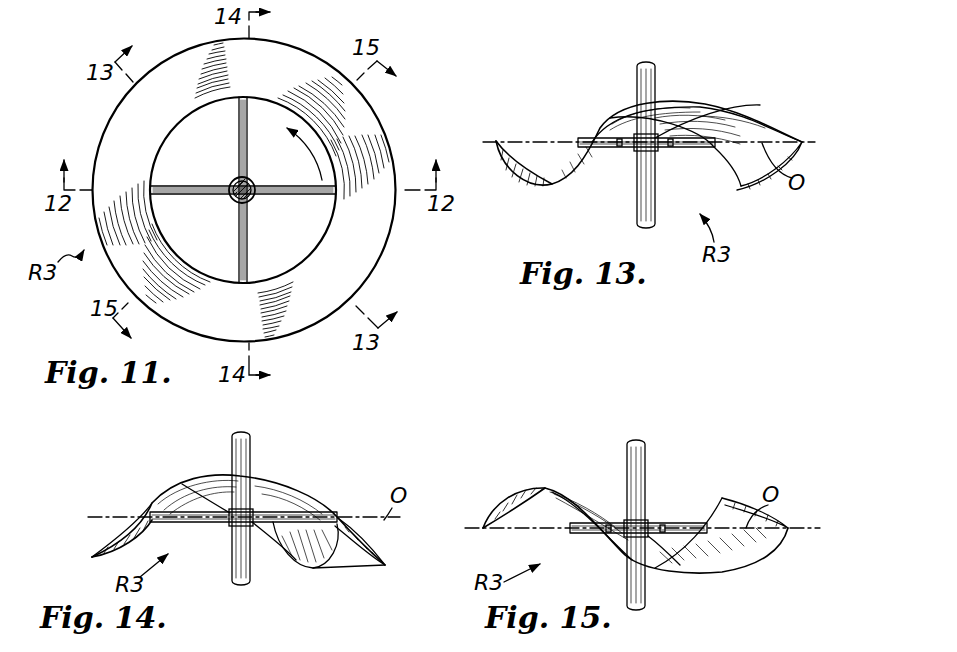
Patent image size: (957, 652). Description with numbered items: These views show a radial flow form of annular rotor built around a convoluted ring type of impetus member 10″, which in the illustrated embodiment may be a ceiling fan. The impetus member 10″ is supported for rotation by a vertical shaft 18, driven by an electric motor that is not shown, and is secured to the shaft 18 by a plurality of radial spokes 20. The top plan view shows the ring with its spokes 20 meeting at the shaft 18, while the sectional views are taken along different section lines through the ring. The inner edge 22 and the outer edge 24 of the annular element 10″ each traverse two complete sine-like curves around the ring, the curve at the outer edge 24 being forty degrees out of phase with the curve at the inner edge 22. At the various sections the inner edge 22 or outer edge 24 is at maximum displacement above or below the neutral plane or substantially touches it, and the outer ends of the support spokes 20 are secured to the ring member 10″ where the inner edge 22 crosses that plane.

In FIG. 11, the impetus member 10 is at (368, 239).
In FIG. 13, the impetus member 10 is at (762, 119).
In FIG. 14, the impetus member 10 is at (290, 496).
In FIG. 15, the impetus member 10 is at (734, 560).
In FIG. 11, the vertical shaft 18 is at (252, 197).
In FIG. 13, the vertical shaft 18 is at (637, 196).
In FIG. 14, the vertical shaft 18 is at (250, 441).
In FIG. 15, the vertical shaft 18 is at (645, 593).
In FIG. 11, the radial spokes 20 is at (205, 185).
In FIG. 13, the radial spokes 20 is at (612, 150).
In FIG. 14, the radial spokes 20 is at (192, 525).
In FIG. 15, the radial spokes 20 is at (610, 522).
In FIG. 11, the inner edge 22 is at (324, 247).
In FIG. 13, the inner edge 22 is at (557, 188).
In FIG. 14, the inner edge 22 is at (150, 505).
In FIG. 15, the inner edge 22 is at (546, 488).
In FIG. 11, the outer edge 24 is at (296, 333).
In FIG. 13, the outer edge 24 is at (496, 141).
In FIG. 14, the outer edge 24 is at (92, 557).
In FIG. 15, the outer edge 24 is at (483, 530).